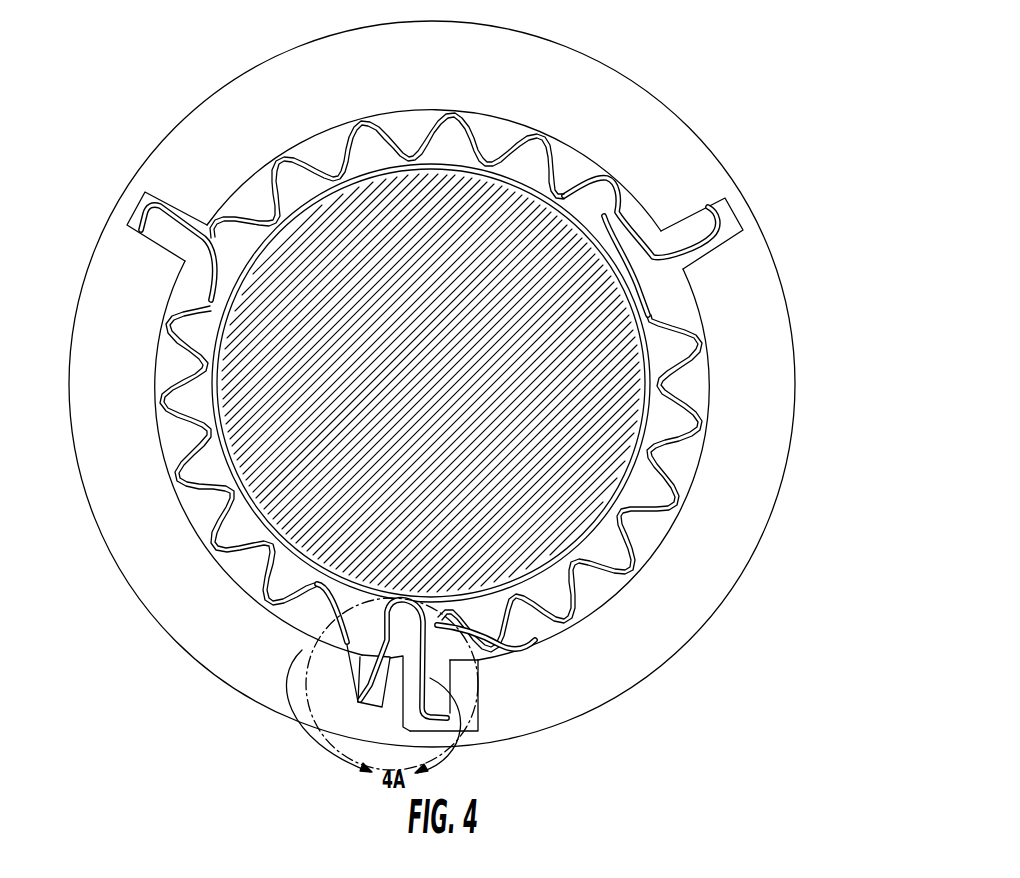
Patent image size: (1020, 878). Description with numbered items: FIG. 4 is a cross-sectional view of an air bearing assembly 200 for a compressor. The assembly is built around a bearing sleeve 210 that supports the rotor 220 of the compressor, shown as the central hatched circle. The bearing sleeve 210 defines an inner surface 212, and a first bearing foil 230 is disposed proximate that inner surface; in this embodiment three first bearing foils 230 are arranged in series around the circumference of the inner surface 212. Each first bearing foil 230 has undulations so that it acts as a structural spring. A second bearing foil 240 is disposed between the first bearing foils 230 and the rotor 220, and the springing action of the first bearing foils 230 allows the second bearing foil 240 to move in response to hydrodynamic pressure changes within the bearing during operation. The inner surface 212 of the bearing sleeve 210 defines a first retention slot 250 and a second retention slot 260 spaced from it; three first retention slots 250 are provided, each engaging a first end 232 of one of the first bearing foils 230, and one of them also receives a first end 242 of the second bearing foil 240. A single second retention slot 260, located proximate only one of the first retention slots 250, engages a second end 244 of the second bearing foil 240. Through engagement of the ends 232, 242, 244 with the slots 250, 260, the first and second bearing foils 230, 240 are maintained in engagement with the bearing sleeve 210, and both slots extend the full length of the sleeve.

The air bearing assembly 200 is at (459, 394).
The bearing sleeve 210 is at (471, 405).
The inner surface 212 is at (668, 514).
The rotor 220 is at (325, 263).
The first bearing foil 230 is at (421, 417).
The first end of first bearing foil 232 is at (434, 690).
The second bearing foil 240 is at (608, 210).
The first end of second bearing foil 242 is at (412, 690).
The second end of second bearing foil 244 is at (360, 657).
The first retention slot 250 is at (462, 691).
The second retention slot 260 is at (332, 691).